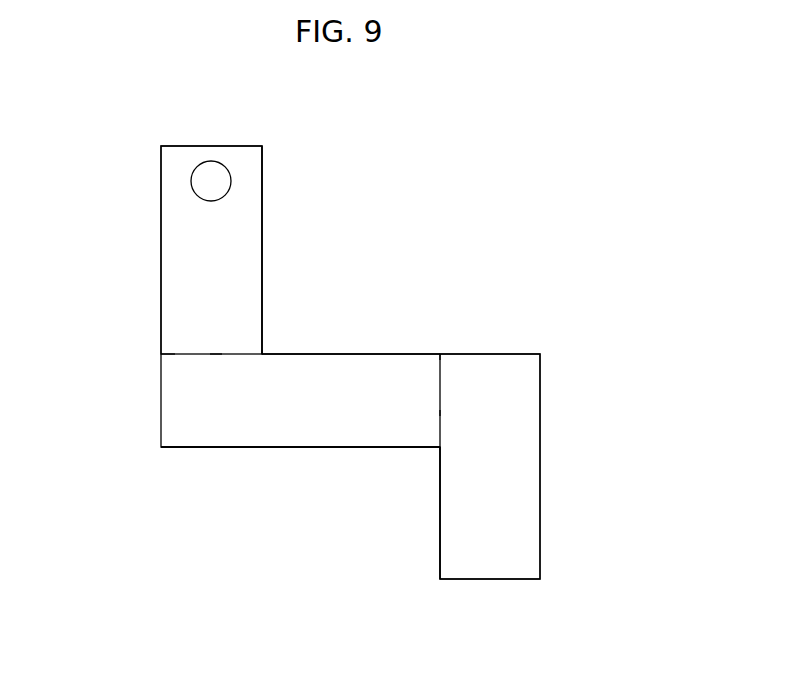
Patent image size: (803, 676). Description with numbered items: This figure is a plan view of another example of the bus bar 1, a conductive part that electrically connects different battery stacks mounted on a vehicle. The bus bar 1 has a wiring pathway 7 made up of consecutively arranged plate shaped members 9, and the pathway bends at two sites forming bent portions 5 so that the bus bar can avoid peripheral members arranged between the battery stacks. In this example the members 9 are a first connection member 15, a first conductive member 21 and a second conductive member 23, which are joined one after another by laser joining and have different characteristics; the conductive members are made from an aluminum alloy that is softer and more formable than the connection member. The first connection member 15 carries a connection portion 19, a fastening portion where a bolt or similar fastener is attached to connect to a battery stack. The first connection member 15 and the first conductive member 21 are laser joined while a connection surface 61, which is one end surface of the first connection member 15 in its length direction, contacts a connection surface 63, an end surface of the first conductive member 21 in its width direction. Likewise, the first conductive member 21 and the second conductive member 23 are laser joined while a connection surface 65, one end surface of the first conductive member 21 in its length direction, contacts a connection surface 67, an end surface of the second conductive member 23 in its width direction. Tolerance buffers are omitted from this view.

The bus bar 1 is at (408, 188).
The bent portion 5 is at (265, 353).
The wiring pathway 7 is at (247, 511).
The plate shaped member 9 is at (255, 232).
The first connection member 15 is at (167, 224).
The connection portion 19 is at (198, 190).
The first conductive member 21 is at (362, 355).
The second conductive member 23 is at (523, 470).
The connection surface 61 is at (215, 357).
The connection surface 63 is at (183, 354).
The connection surface 65 is at (468, 355).
The connection surface 67 is at (440, 413).